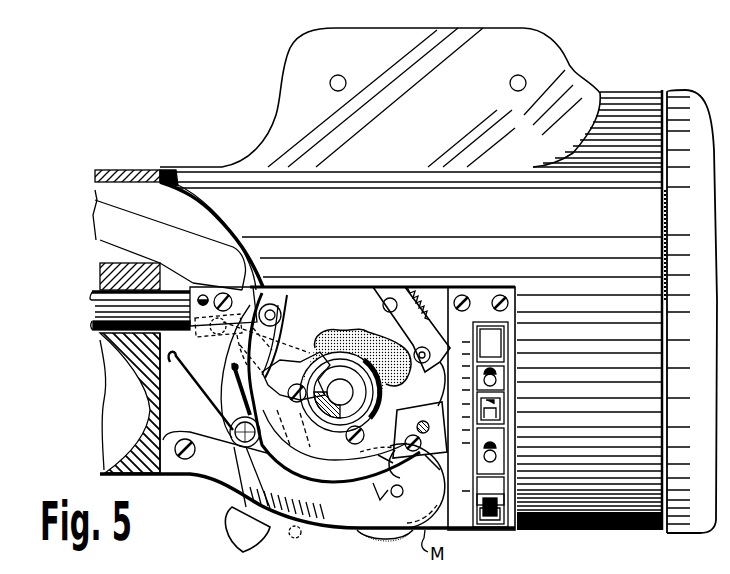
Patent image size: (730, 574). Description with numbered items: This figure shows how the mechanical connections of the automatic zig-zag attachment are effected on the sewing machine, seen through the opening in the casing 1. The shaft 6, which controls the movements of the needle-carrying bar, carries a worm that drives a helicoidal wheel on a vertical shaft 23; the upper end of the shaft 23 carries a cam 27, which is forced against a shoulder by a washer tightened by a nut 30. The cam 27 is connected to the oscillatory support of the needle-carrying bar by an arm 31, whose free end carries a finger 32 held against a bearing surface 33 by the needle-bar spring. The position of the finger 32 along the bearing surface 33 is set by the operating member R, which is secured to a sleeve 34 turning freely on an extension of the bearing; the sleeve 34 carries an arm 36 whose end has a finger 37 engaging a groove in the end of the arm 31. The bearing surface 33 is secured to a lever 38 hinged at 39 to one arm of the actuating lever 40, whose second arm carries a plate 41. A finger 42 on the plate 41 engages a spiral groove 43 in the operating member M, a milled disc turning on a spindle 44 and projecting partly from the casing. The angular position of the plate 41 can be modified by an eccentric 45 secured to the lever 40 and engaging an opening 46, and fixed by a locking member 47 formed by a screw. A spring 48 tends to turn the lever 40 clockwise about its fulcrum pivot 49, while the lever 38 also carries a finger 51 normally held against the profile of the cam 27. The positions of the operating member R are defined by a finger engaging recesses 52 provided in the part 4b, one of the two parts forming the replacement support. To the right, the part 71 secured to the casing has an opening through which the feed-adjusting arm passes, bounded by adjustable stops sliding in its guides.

The casing 1 is at (125, 175).
The shaft 6 is at (92, 300).
The vertical shaft 23 is at (340, 392).
The cam 27 is at (349, 320).
The nut 30 is at (320, 345).
The arm 31 is at (169, 240).
The finger 32 is at (223, 306).
The bearing surface 33 is at (255, 371).
The sleeve 34 is at (344, 435).
The arm 36 is at (287, 336).
The finger 37 is at (198, 338).
The lever 38 is at (296, 377).
The hinge 39 is at (282, 309).
The actuating lever 40 is at (334, 388).
The plate 41 is at (419, 468).
The finger 42 is at (397, 483).
The spiral groove 43 is at (418, 487).
The spindle 44 is at (367, 495).
The eccentric 45 is at (420, 424).
The opening 46 is at (436, 384).
The locking member 47 is at (374, 463).
The spring 48 is at (201, 391).
The fulcrum pivot 49 is at (247, 499).
The finger 51 is at (242, 405).
The recesses 52 is at (287, 525).
The part 71 is at (476, 290).
The support part 4b is at (355, 534).